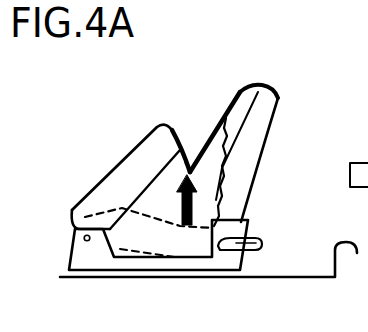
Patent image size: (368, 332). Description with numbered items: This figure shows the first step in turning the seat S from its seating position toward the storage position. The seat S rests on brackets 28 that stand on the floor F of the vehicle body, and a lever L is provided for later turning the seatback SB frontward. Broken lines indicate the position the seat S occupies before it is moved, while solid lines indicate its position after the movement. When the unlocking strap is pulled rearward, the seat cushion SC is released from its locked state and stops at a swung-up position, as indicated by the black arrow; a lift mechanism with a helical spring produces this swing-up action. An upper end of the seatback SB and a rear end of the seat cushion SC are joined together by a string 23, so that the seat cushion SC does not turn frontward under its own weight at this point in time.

The string 23 is at (222, 124).
The seatback SB is at (263, 141).
The seat cushion SC is at (103, 192).
The seat S is at (179, 194).
The lock mechanism L is at (252, 235).
The floor F is at (284, 278).
The bracket 28 is at (122, 268).